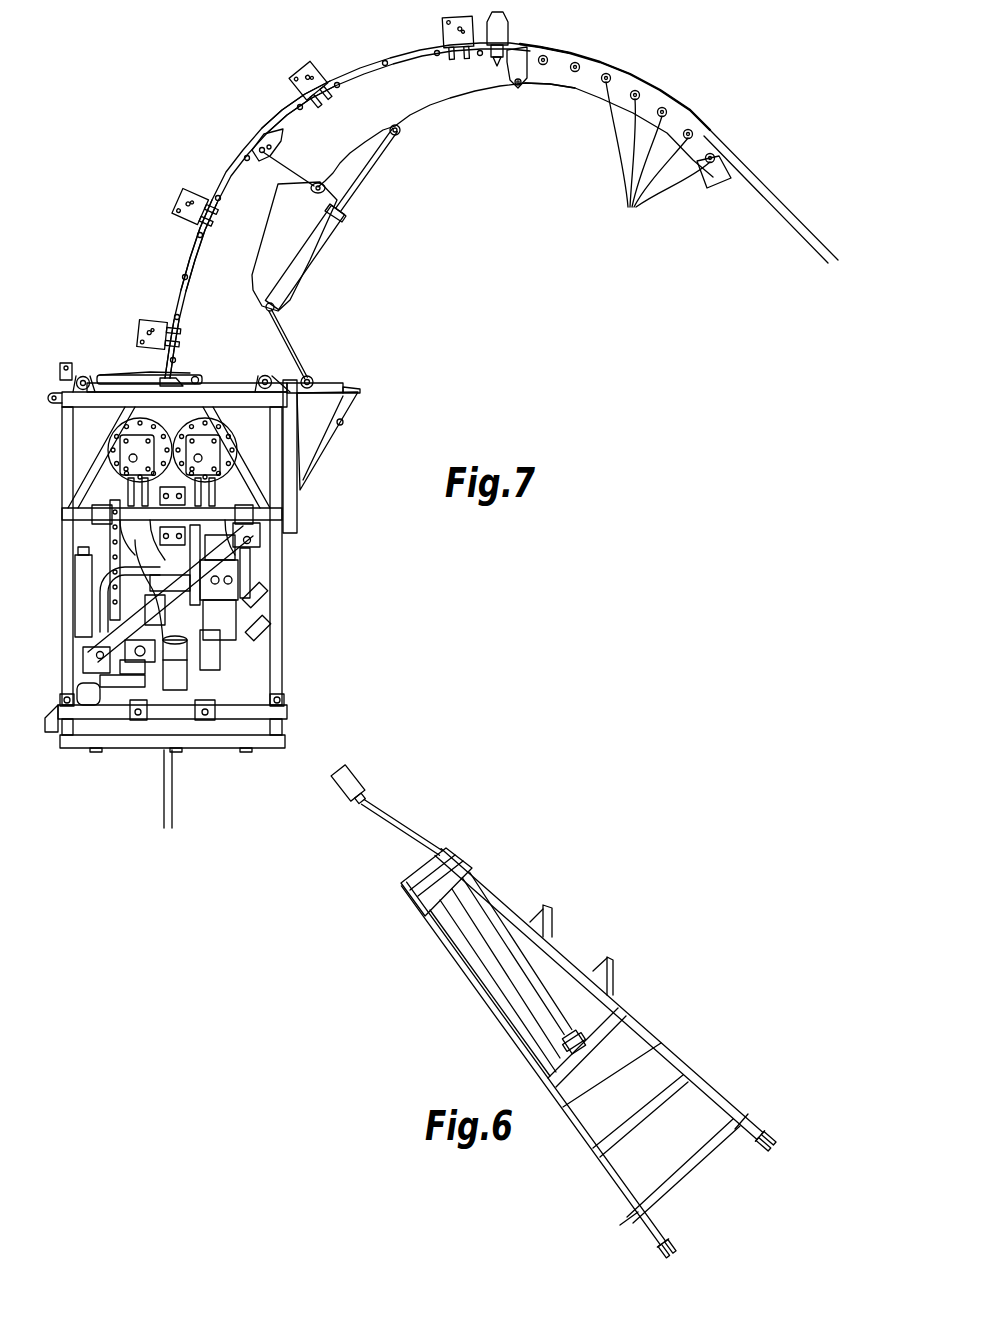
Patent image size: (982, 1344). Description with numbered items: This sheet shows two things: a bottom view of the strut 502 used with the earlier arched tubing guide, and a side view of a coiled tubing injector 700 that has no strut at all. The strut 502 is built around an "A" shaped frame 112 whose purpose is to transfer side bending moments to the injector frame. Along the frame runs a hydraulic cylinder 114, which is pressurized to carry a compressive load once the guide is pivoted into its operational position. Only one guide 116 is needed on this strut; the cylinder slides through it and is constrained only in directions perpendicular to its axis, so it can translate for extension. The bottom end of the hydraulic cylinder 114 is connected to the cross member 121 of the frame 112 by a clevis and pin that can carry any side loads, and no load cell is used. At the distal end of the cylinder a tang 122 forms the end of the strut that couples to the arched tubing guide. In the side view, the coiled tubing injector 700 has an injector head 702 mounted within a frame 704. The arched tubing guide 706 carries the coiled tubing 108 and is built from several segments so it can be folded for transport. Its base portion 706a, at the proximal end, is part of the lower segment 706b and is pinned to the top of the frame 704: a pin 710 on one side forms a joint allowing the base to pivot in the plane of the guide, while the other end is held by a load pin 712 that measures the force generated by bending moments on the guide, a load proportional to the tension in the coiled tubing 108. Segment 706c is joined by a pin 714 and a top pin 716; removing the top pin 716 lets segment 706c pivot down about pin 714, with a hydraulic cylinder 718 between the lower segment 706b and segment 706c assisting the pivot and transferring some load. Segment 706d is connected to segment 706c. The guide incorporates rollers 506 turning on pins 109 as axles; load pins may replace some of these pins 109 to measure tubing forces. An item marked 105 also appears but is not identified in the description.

In FIG. 7, the coiled tubing 108 is at (227, 168).
In FIG. 7, the hose 105 is at (387, 62).
In FIG. 7, the pins 109 is at (658, 156).
In FIG. 7, the rollers 506 is at (333, 78).
In FIG. 7, the coiled tubing injector 700 is at (506, 216).
In FIG. 7, the injector head 702 is at (137, 540).
In FIG. 7, the frame 704 is at (280, 647).
In FIG. 7, the arched tubing guide 706 is at (620, 55).
In FIG. 7, the base portion 706a is at (128, 359).
In FIG. 7, the lower segment 706b is at (197, 260).
In FIG. 7, the segment 706c is at (290, 120).
In FIG. 7, the segment 706d is at (570, 85).
In FIG. 7, the pin 710 is at (199, 377).
In FIG. 7, the load pin 712 is at (313, 378).
In FIG. 7, the pin 714 is at (325, 191).
In FIG. 7, the top pin 716 is at (256, 144).
In FIG. 7, the hydraulic cylinder 718 is at (332, 227).
In FIG. 6, the "A" shaped frame 112 is at (704, 1088).
In FIG. 6, the hydraulic cylinder 114 is at (480, 928).
In FIG. 6, the guide 116 is at (459, 871).
In FIG. 6, the cross member 121 is at (615, 1027).
In FIG. 6, the tang 122 is at (356, 776).
In FIG. 6, the strut 502 is at (653, 918).